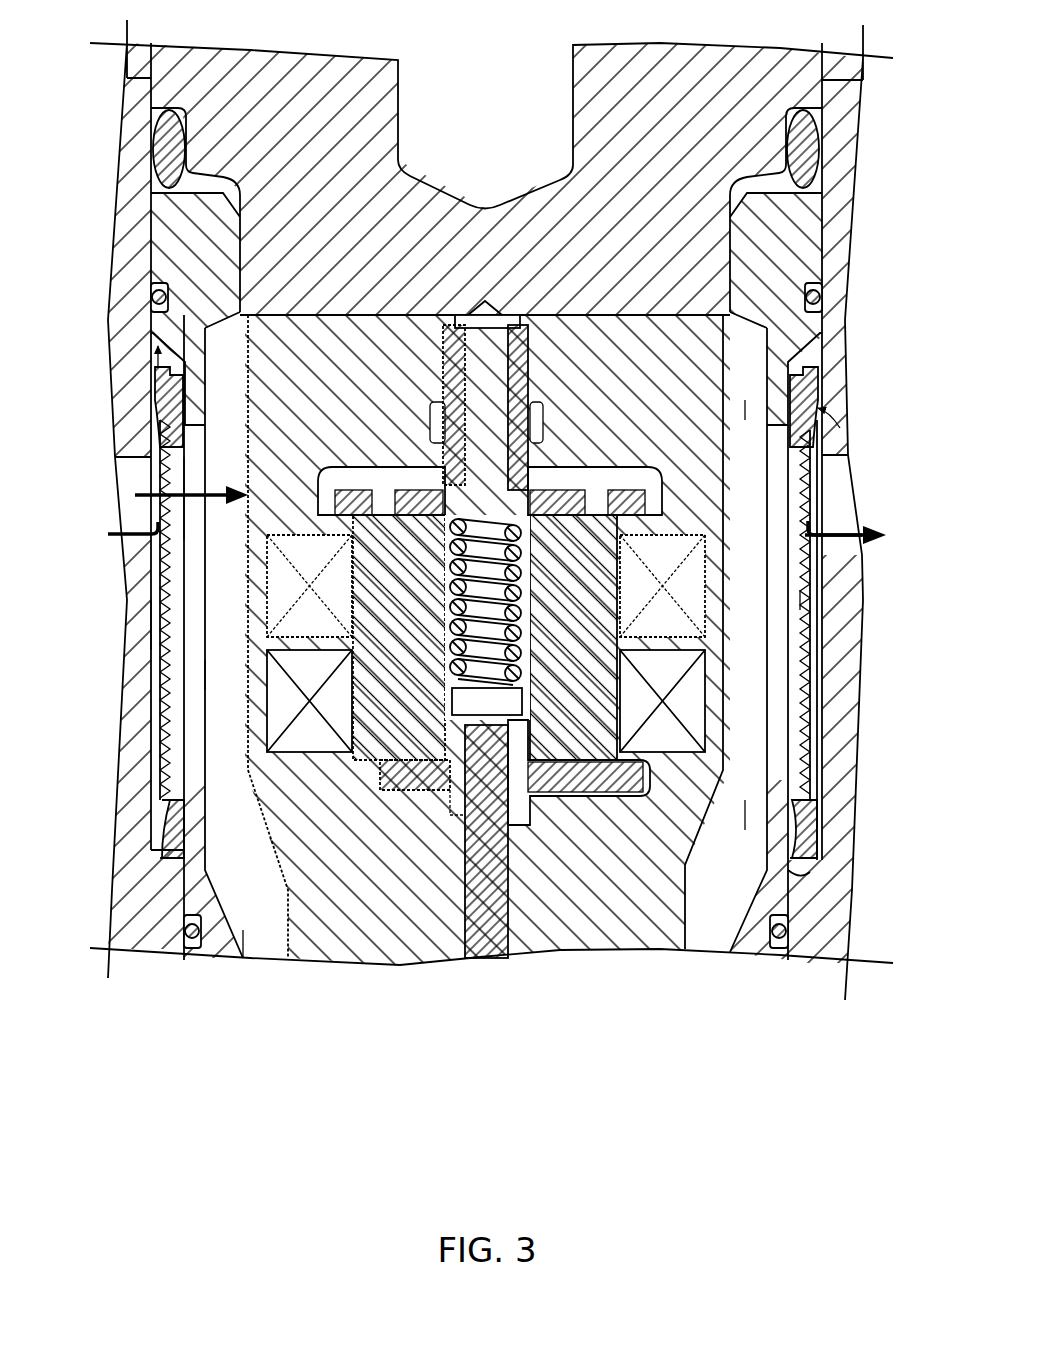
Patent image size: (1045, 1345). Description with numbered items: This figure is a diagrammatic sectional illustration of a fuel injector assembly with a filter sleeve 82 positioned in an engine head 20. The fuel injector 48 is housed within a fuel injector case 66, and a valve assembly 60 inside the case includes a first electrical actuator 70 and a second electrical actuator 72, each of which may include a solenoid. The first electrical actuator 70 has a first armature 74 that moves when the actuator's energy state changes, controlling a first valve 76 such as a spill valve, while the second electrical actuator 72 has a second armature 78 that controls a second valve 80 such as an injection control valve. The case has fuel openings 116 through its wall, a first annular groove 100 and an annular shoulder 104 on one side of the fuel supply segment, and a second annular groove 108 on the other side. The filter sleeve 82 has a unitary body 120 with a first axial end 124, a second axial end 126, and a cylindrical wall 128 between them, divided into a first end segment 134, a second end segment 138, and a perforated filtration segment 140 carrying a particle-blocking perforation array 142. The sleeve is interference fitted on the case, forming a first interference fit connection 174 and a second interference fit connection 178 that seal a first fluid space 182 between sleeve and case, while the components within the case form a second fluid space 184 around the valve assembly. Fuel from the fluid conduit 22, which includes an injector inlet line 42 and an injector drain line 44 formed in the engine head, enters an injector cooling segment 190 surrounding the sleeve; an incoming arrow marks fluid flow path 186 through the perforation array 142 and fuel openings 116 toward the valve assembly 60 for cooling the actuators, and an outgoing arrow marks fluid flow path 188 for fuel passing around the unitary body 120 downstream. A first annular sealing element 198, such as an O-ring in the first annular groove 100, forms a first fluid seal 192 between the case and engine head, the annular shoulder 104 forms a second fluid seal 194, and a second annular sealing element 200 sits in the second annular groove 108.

The engine head 20 is at (856, 118).
The fluid conduit 22 is at (110, 535).
The injector inlet line 42 is at (118, 470).
The injector drain line 44 is at (848, 480).
The fuel injector 48 is at (818, 232).
The valve assembly 60 is at (365, 467).
The fuel injector case 66 is at (748, 950).
The first electrical actuator 70 is at (283, 530).
The second electrical actuator 72 is at (305, 772).
The first armature 74 is at (568, 490).
The first valve 76 is at (520, 372).
The second armature 78 is at (645, 790).
The second valve 80 is at (512, 890).
The filter sleeve 82 is at (160, 818).
The first annular groove 100 is at (823, 296).
The annular shoulder 104 is at (150, 325).
The second annular groove 108 is at (790, 940).
The fuel openings 116 is at (208, 672).
The unitary body 120 is at (160, 850).
The first axial end 124 is at (820, 385).
The second axial end 126 is at (812, 872).
The cylindrical wall 128 is at (820, 840).
The first end segment 134 is at (840, 428).
The second end segment 138 is at (812, 818).
The filtration segment 140 is at (818, 665).
The perforation array 142 is at (808, 598).
The first interference fit connection 174 is at (790, 400).
The second interference fit connection 178 is at (770, 823).
The first fluid space 182 is at (178, 745).
The second fluid space 184 is at (265, 935).
The fluid flow path 186 is at (238, 492).
The fluid flow path 188 is at (866, 508).
The injector cooling segment 190 is at (150, 622).
The first fluid seal 192 is at (150, 296).
The second fluid seal 194 is at (156, 383).
The first annular sealing element 198 is at (822, 308).
The second annular sealing element 200 is at (790, 932).